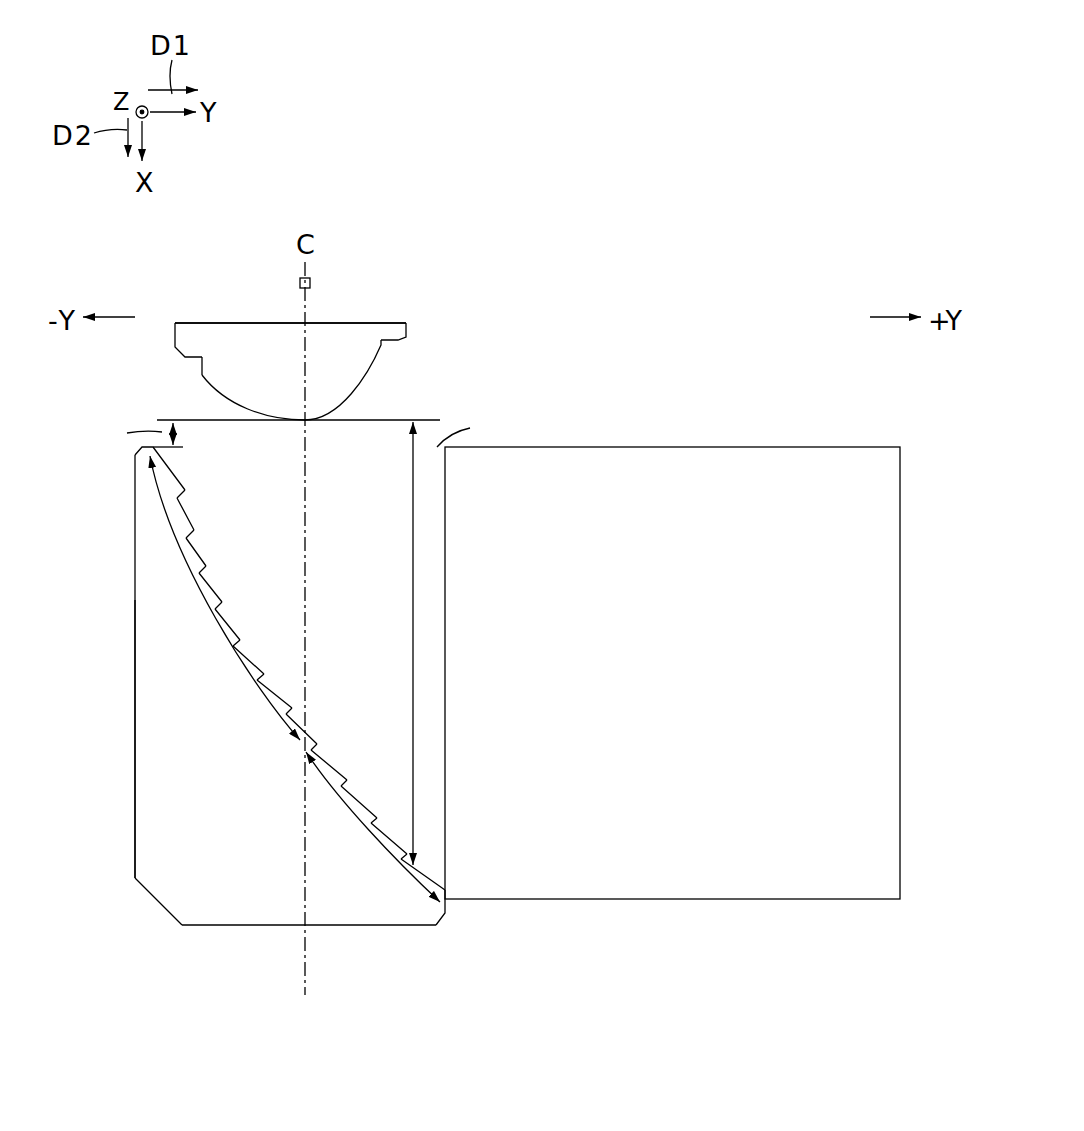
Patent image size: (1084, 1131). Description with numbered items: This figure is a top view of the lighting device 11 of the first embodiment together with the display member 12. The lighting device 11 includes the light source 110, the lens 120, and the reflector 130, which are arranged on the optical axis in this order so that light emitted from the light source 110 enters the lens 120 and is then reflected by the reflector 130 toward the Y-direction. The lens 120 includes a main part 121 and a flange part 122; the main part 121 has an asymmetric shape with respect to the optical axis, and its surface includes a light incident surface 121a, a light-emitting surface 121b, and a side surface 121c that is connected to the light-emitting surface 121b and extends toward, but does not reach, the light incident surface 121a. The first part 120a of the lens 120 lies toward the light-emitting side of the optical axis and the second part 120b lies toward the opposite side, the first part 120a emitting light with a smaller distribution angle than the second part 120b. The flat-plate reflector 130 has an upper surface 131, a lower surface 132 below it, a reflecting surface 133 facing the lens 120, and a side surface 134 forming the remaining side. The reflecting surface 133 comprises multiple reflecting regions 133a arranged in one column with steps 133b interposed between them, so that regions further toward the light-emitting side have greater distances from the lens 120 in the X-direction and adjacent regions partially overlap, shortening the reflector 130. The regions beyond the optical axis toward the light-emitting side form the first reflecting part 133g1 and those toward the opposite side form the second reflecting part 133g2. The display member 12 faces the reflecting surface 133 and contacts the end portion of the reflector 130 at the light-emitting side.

The lighting device 11 is at (180, 300).
The display member 12 is at (848, 472).
The light source 110 is at (312, 283).
The lens 120 is at (498, 312).
The first part of the lens 120a is at (357, 337).
The second part of the lens 120b is at (233, 393).
The main part 121 is at (366, 358).
The light incident surface 121a is at (239, 322).
The light-emitting surface 121b is at (358, 392).
The side surface 121c is at (198, 372).
The flange part 122 is at (408, 327).
The reflector 130 is at (167, 890).
The upper surface 131 is at (154, 722).
The lower surface 132 is at (160, 770).
The reflecting surface 133 is at (447, 888).
The reflecting region 133a is at (172, 468).
The step 133b is at (183, 498).
The first reflecting part 133g1 is at (368, 835).
The second reflecting part 133g2 is at (206, 600).
The side surface 134 is at (222, 926).